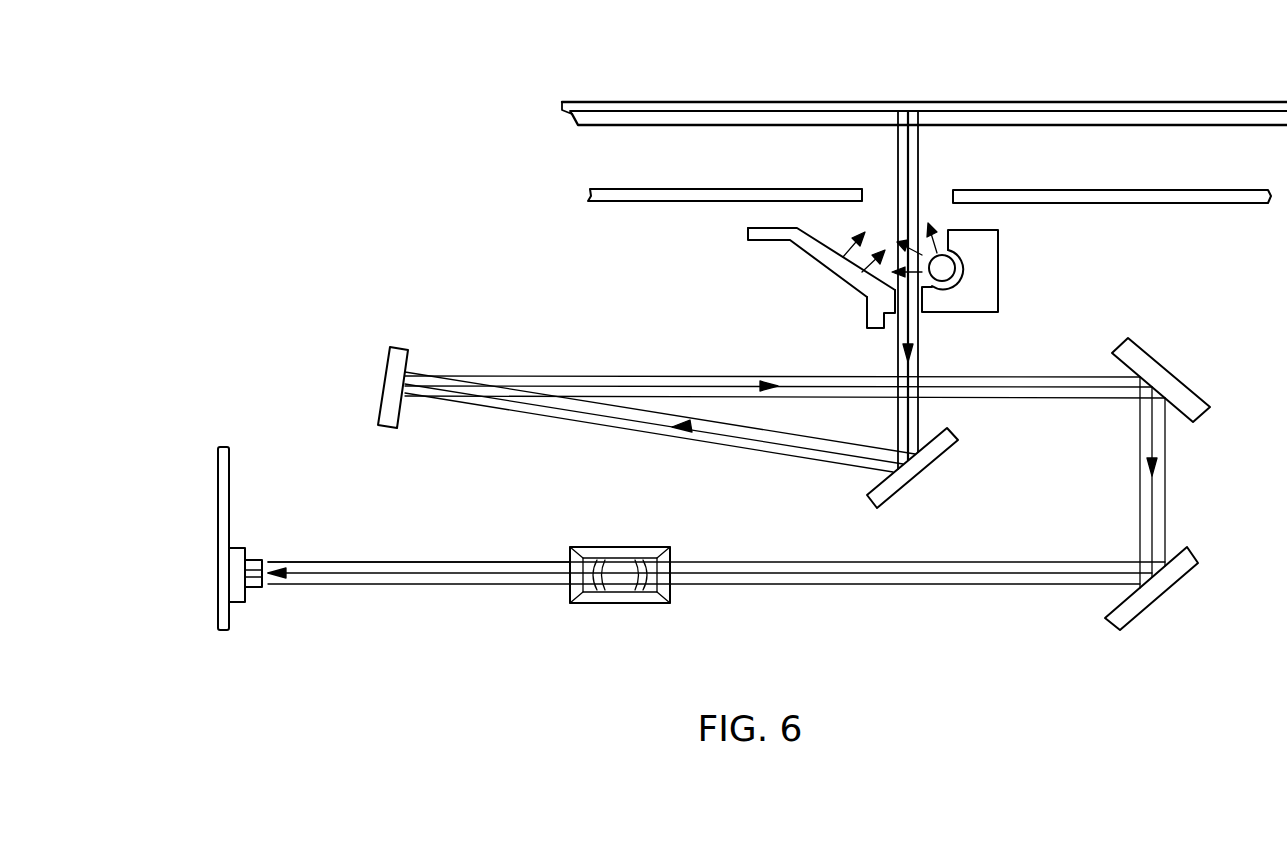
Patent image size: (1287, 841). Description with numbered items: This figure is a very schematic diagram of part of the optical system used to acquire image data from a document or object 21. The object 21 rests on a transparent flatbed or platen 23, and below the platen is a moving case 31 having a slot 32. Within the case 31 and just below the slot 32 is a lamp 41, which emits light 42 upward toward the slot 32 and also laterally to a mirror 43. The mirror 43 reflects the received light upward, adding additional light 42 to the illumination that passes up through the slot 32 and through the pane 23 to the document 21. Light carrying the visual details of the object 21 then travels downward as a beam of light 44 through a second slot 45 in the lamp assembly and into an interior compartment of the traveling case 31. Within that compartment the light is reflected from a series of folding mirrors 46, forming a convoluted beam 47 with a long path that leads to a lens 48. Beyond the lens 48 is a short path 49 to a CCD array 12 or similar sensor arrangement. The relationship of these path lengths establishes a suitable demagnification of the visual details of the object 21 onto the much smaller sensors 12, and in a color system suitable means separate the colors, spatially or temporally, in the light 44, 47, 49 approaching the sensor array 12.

The CCD array 12 is at (254, 540).
The document or object 21 is at (752, 105).
The transparent flatbed or platen 23 is at (848, 115).
The moving case 31 is at (733, 188).
The slot 32 is at (866, 192).
The lamp 41 is at (952, 283).
The light 42 is at (852, 245).
The mirror 43 is at (813, 235).
The beam of light 44 is at (920, 156).
The second slot 45 is at (890, 302).
The folding mirrors 46 is at (775, 486).
The convoluted beam 47 is at (716, 484).
The lens 48 is at (641, 595).
The short path 49 is at (419, 596).